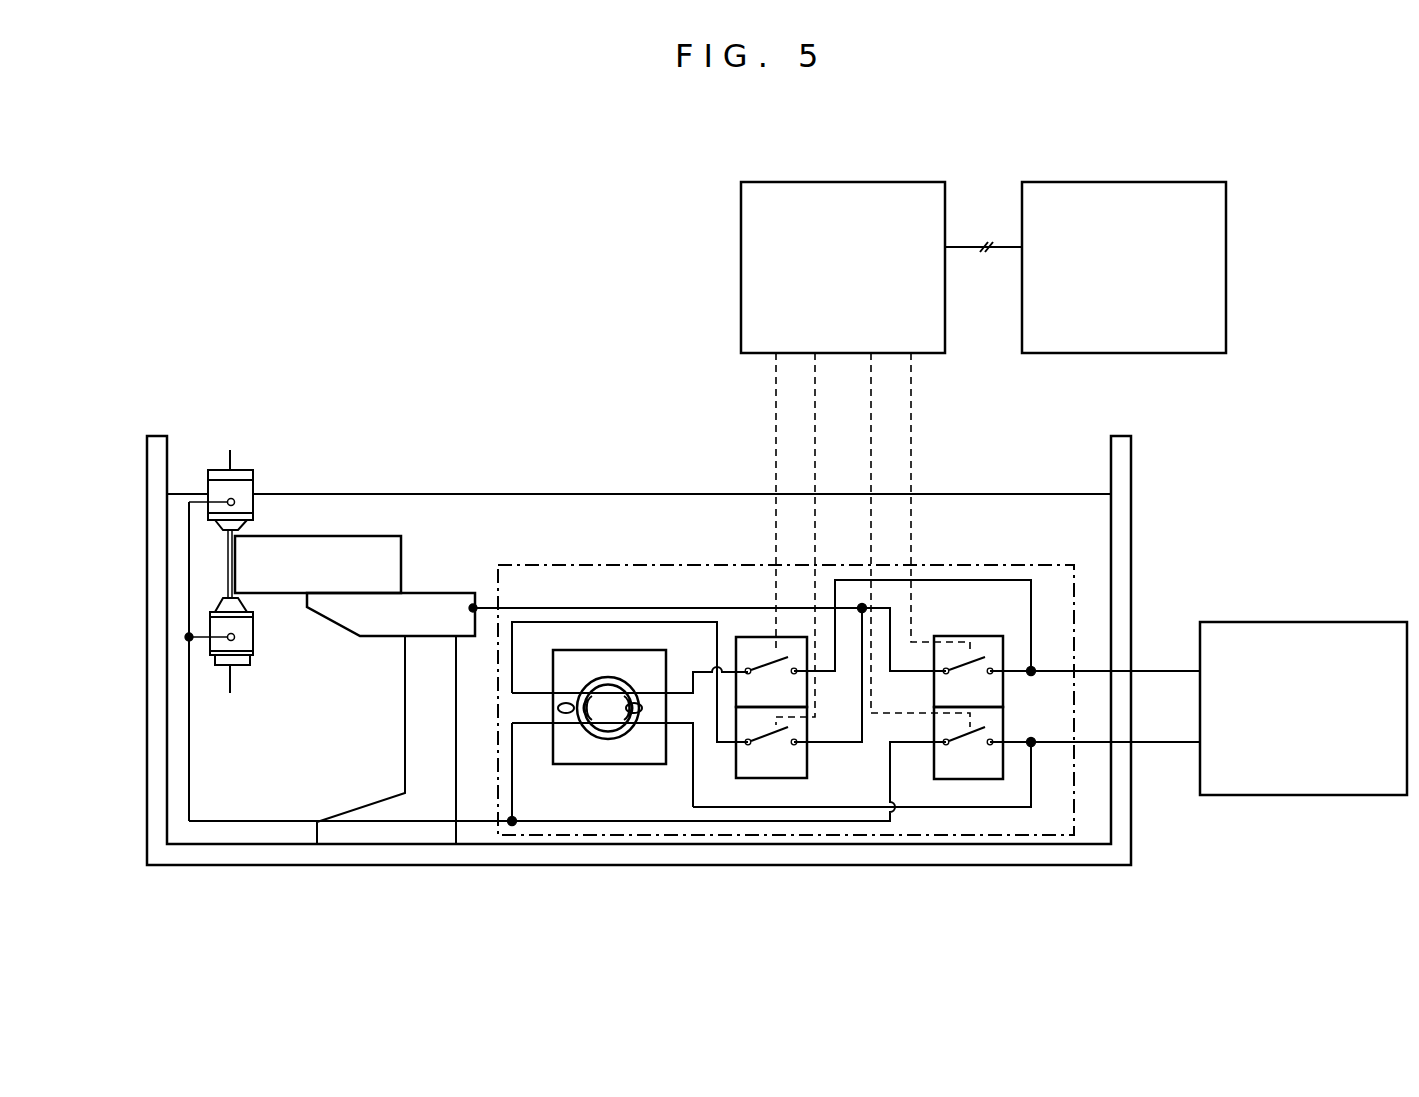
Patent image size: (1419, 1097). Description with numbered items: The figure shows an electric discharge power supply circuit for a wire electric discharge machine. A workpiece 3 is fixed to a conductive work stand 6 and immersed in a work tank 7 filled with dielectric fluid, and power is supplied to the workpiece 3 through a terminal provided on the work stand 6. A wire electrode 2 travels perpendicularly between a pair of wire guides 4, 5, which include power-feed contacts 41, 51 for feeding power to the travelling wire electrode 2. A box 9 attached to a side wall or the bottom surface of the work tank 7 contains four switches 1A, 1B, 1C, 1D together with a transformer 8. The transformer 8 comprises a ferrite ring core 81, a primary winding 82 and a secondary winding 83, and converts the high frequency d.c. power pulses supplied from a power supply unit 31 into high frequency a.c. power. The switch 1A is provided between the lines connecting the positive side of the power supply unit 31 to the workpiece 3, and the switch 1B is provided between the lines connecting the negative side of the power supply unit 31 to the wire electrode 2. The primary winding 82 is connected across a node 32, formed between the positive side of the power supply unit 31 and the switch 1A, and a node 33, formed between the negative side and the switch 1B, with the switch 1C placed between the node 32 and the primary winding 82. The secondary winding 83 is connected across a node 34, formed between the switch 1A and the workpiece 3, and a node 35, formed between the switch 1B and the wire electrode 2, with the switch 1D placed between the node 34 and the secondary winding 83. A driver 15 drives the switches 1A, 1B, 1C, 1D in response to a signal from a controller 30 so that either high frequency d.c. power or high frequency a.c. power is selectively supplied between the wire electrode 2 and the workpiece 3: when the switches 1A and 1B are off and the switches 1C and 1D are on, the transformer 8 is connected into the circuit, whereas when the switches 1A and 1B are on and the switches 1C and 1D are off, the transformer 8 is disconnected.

The switch 1A is at (990, 647).
The switch 1B is at (955, 770).
The switch 1C is at (748, 655).
The switch 1D is at (779, 772).
The wire electrode 2 is at (230, 567).
The workpiece 3 is at (390, 552).
The wire guide 4 is at (242, 474).
The power-feed contact 41 is at (238, 504).
The wire guide 5 is at (212, 663).
The power-feed contact 51 is at (237, 640).
The work stand 6 is at (448, 607).
The work tank 7 is at (160, 442).
The transformer 8 is at (615, 715).
The ferrite ring core 81 is at (610, 675).
The primary winding 82 is at (638, 730).
The secondary winding 83 is at (577, 730).
The box 9 is at (1074, 808).
The driver 15 is at (758, 182).
The controller 30 is at (1167, 182).
The power supply unit 31 is at (1302, 622).
The node 32 is at (1031, 671).
The node 33 is at (1031, 742).
The node 34 is at (862, 608).
The node 35 is at (512, 821).